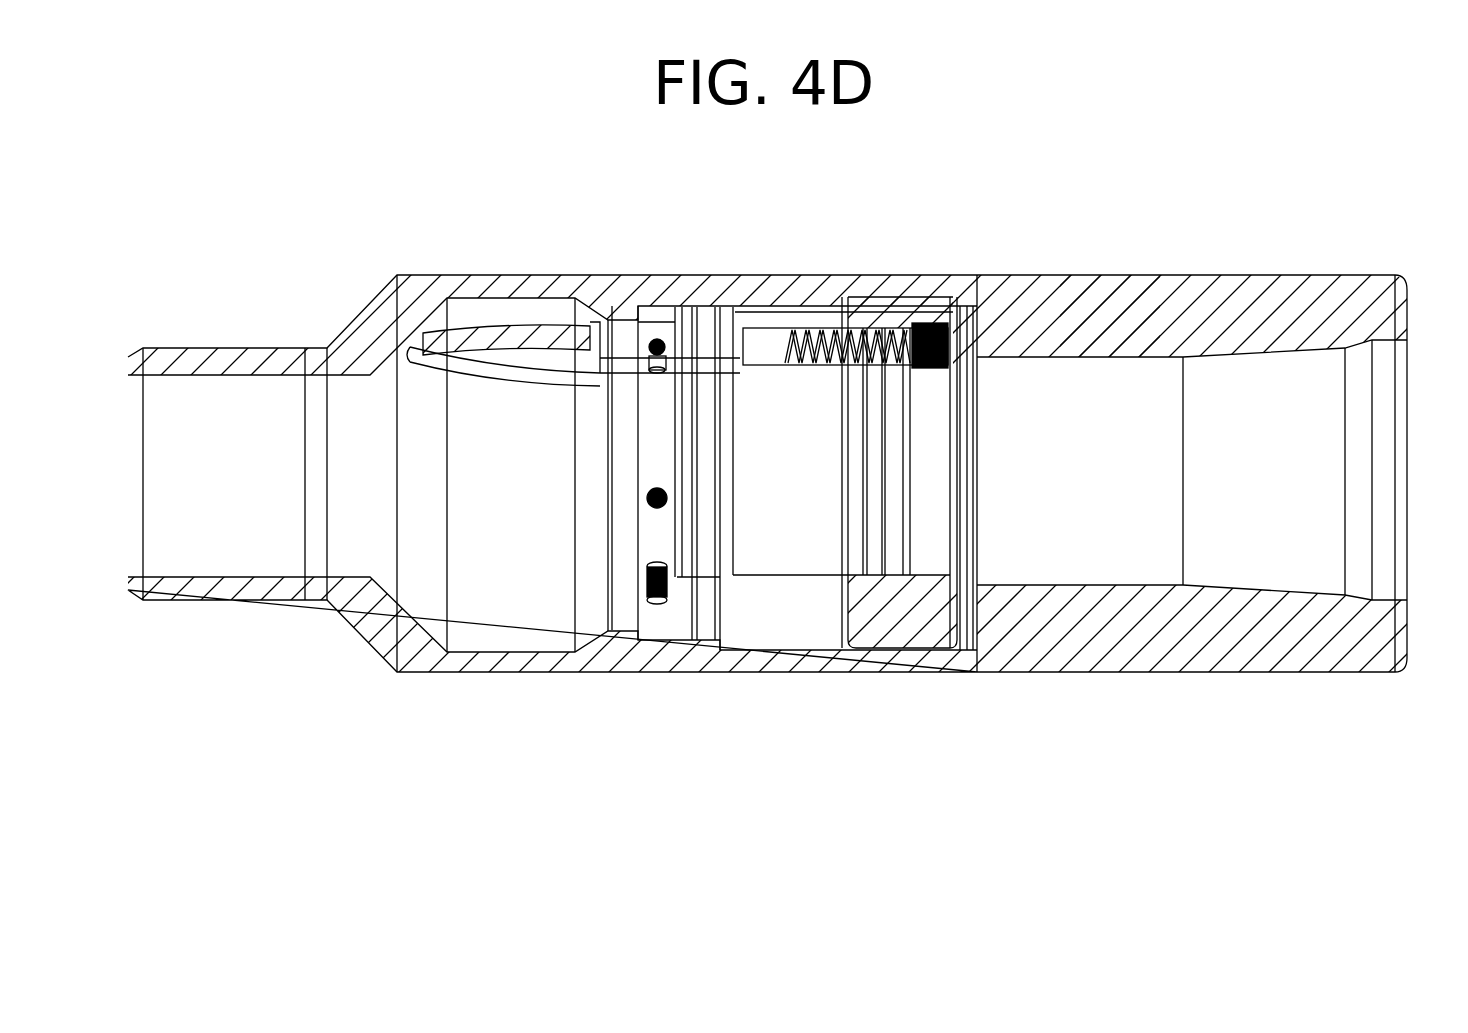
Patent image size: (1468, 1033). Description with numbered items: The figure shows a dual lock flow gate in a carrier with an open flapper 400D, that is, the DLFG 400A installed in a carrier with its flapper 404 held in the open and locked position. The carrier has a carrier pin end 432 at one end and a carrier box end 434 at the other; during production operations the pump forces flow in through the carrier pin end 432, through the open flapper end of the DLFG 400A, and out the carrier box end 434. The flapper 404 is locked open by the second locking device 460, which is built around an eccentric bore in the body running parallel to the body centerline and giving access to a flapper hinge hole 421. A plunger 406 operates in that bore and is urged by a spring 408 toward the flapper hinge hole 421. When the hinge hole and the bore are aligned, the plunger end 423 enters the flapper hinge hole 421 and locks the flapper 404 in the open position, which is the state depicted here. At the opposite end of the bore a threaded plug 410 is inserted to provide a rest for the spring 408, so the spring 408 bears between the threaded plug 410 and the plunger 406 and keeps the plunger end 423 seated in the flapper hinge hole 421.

The DLFG in a carrier with an open flapper 400D is at (1212, 156).
The DLFG 400A is at (764, 650).
The carrier pin end 432 is at (427, 277).
The carrier box end 434 is at (1283, 275).
The threaded plug 410 is at (1103, 288).
The second locking device 460 is at (832, 295).
The plunger end 423 is at (623, 335).
The flapper hinge hole 421 is at (661, 343).
The plunger 406 is at (772, 347).
The spring 408 is at (960, 277).
The flapper 404 is at (462, 370).